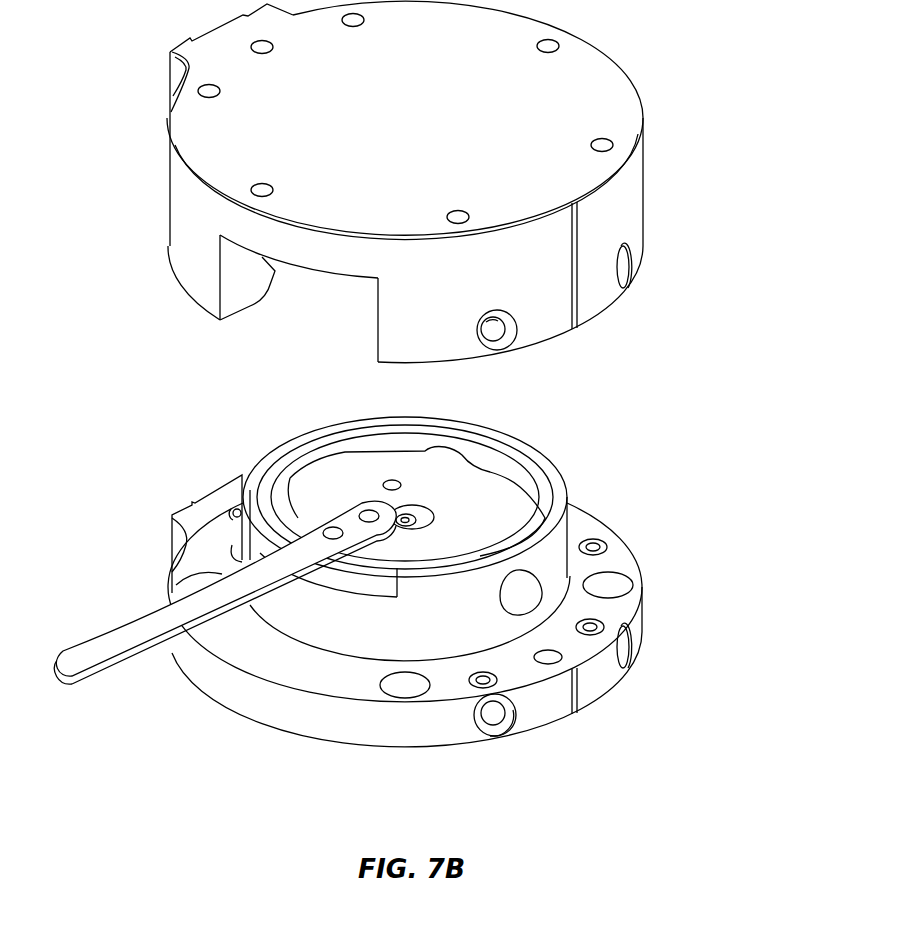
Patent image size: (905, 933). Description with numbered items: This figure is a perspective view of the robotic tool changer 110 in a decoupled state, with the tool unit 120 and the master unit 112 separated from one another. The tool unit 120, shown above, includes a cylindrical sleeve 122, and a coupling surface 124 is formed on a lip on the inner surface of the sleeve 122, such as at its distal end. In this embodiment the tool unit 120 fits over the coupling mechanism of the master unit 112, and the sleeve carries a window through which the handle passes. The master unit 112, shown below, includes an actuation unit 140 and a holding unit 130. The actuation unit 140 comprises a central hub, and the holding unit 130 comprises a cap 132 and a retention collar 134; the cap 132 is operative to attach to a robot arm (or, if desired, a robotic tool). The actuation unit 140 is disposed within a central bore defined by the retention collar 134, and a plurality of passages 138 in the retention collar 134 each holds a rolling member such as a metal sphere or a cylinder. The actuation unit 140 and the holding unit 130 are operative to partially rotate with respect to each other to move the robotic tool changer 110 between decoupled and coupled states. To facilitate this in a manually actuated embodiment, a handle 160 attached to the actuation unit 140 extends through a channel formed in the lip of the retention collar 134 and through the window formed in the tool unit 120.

The robotic tool changer 110 is at (762, 403).
The master unit 112 is at (708, 562).
The tool unit 120 is at (570, 97).
The cylindrical sleeve 122 is at (614, 211).
The coupling surface 124 is at (260, 256).
The holding unit 130 is at (588, 683).
The cap 132 is at (295, 667).
The retention collar 134 is at (357, 627).
The passages 138 is at (545, 601).
The actuation unit 140 is at (490, 503).
The handle 160 is at (132, 638).